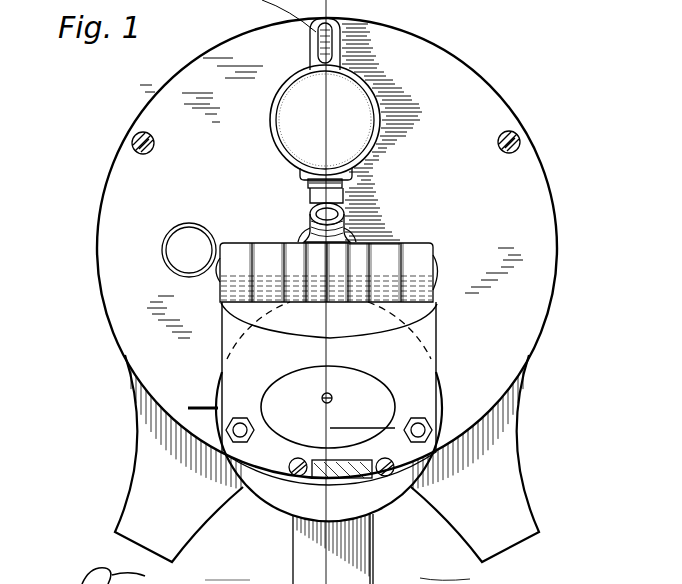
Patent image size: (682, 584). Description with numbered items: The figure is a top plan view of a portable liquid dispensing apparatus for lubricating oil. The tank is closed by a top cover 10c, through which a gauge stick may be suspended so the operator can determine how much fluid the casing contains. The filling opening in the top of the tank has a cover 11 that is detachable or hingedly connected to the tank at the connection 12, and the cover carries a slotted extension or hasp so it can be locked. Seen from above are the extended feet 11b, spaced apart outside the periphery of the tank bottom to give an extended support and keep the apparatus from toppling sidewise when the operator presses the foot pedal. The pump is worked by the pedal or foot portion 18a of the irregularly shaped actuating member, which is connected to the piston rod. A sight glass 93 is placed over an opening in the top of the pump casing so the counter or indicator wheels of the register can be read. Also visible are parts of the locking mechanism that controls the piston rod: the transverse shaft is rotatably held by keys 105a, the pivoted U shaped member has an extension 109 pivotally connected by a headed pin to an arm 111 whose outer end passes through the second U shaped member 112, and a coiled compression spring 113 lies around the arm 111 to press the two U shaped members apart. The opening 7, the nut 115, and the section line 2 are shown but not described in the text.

The top cover 10c is at (534, 197).
The cover 11 is at (296, 125).
The hinged connection 12 is at (312, 190).
The opening 7 is at (183, 233).
The section line 2 is at (224, 249).
The coiled compression spring 113 is at (391, 253).
The U shaped member 112 is at (437, 332).
The sight glass 93 is at (363, 473).
The arm 111 is at (240, 417).
The nut 115 is at (418, 417).
The legs 11b is at (148, 484).
The pedal or foot portion 18a is at (303, 550).
The keys 105a is at (436, 568).
The extension 109 is at (227, 577).